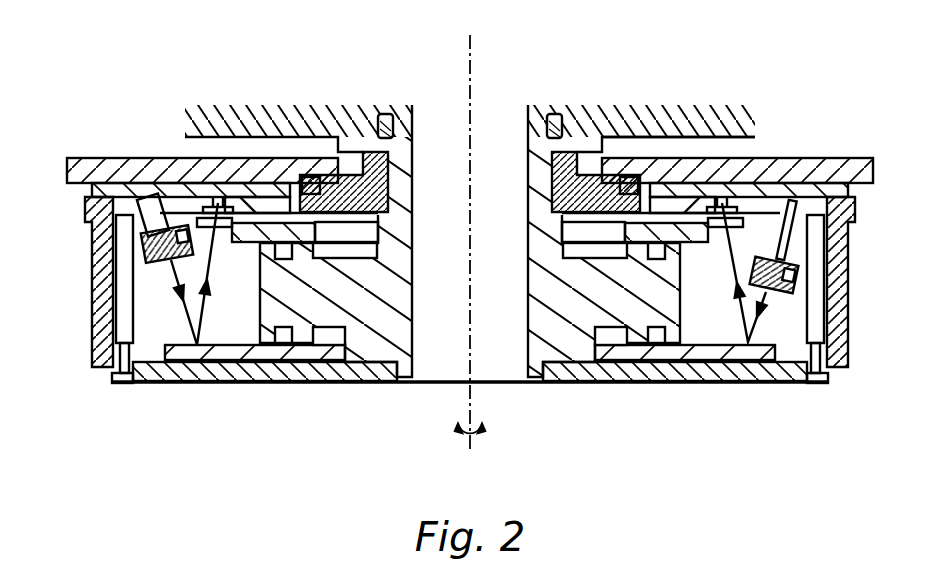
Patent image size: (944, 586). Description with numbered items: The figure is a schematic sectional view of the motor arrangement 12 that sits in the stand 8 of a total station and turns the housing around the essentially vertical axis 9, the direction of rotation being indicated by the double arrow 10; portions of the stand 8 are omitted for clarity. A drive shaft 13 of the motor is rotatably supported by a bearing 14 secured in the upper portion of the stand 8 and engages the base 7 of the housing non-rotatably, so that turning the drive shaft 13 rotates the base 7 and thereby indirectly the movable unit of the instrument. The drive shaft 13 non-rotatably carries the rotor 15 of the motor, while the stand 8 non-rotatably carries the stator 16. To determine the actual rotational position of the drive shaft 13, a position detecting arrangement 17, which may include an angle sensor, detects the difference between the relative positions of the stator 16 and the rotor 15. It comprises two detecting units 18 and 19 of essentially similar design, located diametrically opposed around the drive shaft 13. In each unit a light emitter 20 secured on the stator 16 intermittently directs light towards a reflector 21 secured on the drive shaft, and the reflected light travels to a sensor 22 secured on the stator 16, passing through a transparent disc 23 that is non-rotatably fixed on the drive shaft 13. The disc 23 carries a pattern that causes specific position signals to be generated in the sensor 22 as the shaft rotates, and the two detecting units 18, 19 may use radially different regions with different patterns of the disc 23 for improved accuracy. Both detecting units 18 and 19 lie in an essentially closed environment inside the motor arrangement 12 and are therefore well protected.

The base 7 is at (745, 115).
The stand 8 is at (804, 168).
The vertical axis 9 is at (471, 54).
The double arrow 10 is at (483, 436).
The motor arrangement 12 is at (650, 438).
The drive shaft 13 is at (388, 292).
The bearing 14 is at (390, 172).
The rotor 15 is at (244, 395).
The stator 16 is at (78, 212).
The position detecting arrangement 17 is at (734, 141).
The detecting unit 18 is at (172, 294).
The detecting unit 19 is at (786, 317).
The light emitter 20 is at (178, 257).
The reflector 21 is at (238, 354).
The sensor 22 is at (207, 200).
The transparent disc 23 is at (700, 243).